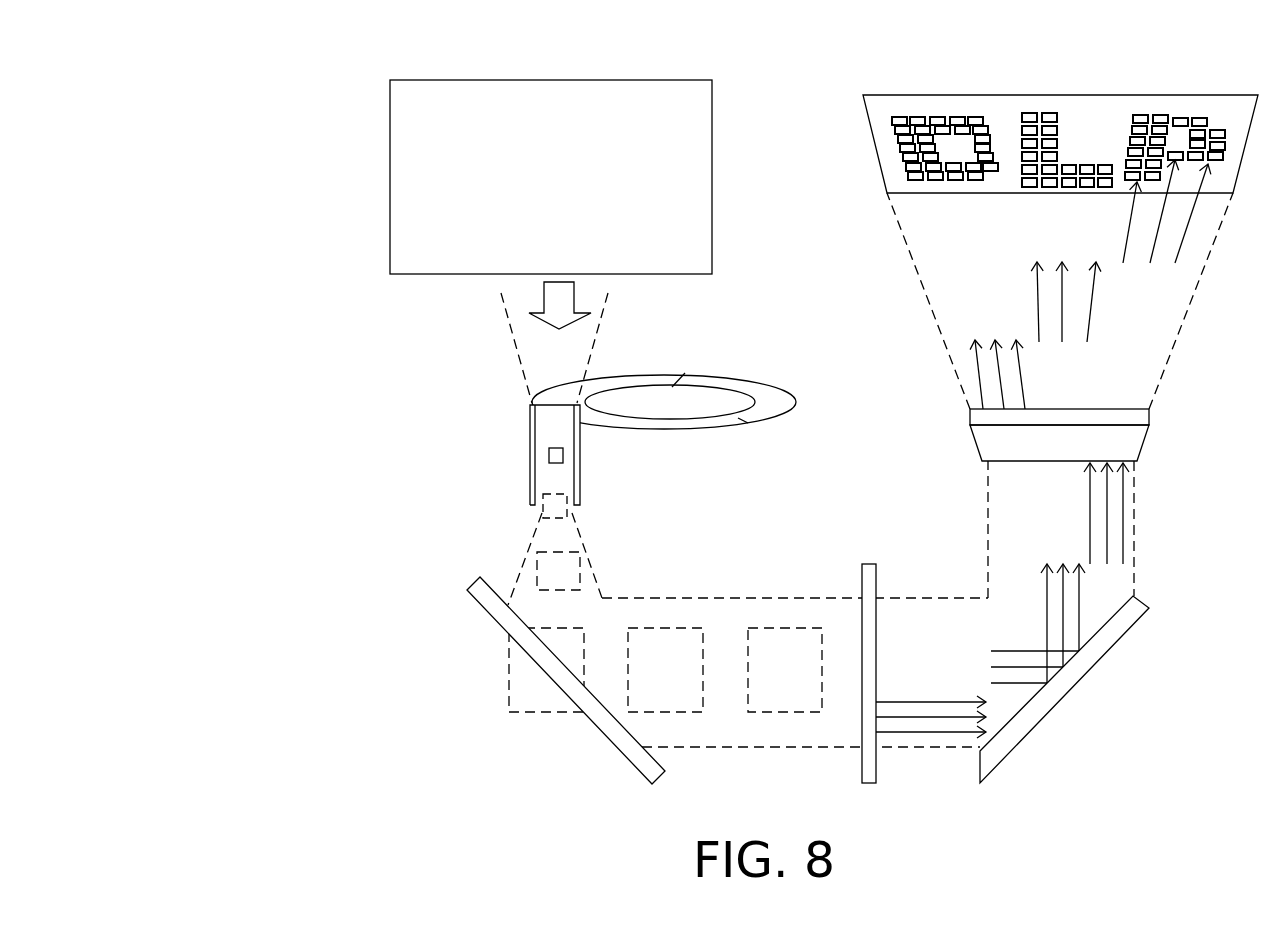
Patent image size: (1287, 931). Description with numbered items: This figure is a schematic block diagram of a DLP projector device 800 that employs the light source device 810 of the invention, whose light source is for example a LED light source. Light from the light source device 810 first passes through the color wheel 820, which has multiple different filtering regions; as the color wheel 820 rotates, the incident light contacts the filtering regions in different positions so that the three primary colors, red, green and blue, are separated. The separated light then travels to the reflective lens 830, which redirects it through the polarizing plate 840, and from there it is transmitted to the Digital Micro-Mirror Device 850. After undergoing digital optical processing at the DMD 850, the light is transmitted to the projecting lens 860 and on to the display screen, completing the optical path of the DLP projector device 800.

The DLP projector device 800 is at (278, 112).
The light source device 810 is at (574, 80).
The color wheel 820 is at (718, 375).
The reflective lens 830 is at (552, 680).
The polarizing plate 840 is at (865, 783).
The Digital Micro-Mirror Device (DMD) 850 is at (1117, 642).
The projecting lens 860 is at (1143, 441).